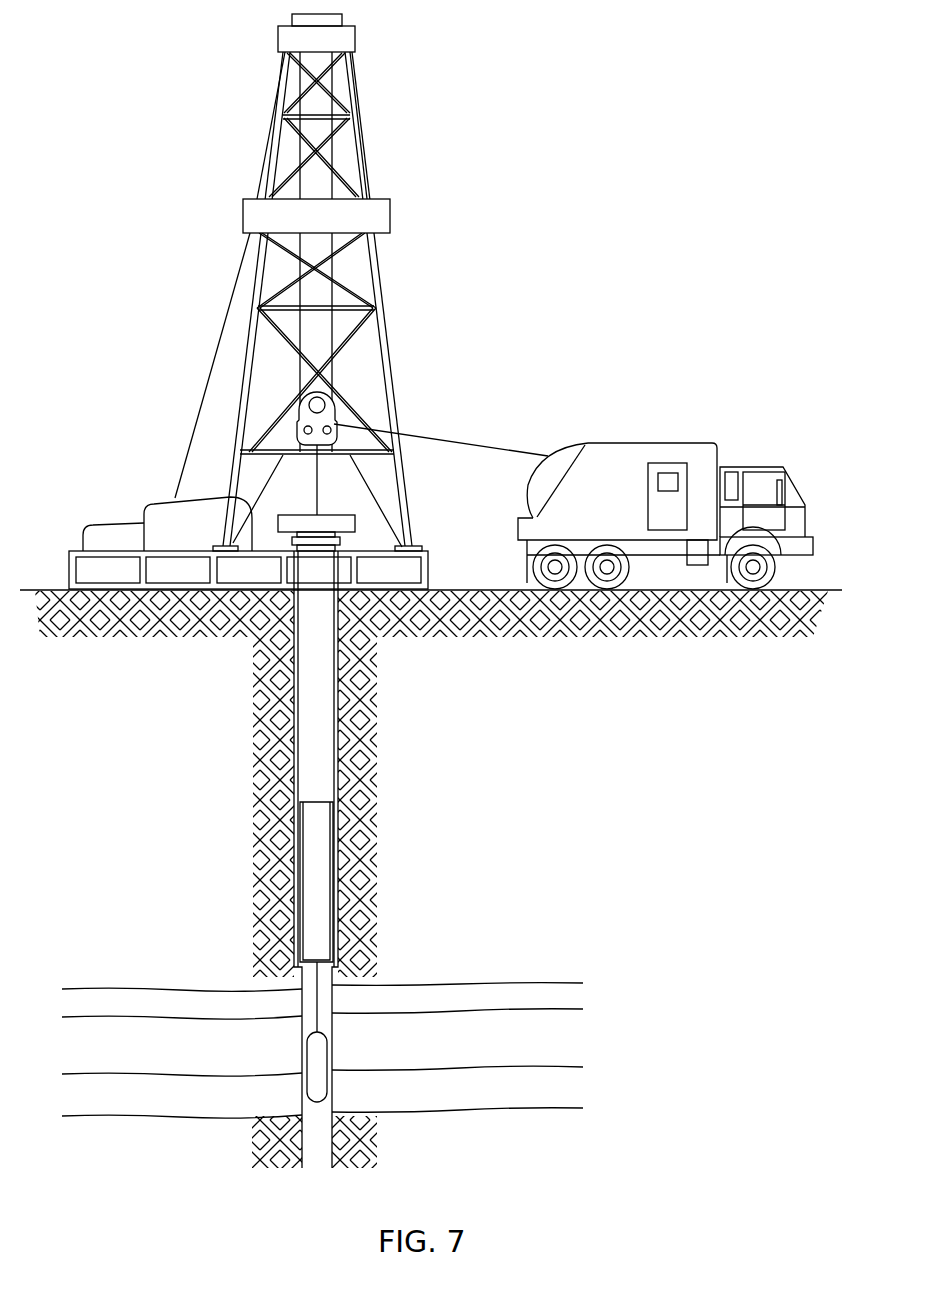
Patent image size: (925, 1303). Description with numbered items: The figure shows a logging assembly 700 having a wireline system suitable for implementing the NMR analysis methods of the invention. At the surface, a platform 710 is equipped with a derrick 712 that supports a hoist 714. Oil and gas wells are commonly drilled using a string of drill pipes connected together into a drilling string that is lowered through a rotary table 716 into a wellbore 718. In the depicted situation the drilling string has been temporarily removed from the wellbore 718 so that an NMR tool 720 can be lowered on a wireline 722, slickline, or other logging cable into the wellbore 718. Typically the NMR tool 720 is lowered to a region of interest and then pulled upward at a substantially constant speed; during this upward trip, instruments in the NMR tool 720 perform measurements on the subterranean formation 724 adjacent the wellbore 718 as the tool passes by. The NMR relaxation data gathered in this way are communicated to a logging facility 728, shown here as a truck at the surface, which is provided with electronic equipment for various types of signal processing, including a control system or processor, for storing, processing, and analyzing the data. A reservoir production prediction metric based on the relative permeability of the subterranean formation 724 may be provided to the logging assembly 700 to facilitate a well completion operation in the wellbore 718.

The logging assembly 700 is at (583, 267).
The platform 710 is at (428, 573).
The derrick 712 is at (413, 533).
The hoist 714 is at (336, 408).
The rotary table 716 is at (357, 523).
The wellbore 718 is at (302, 996).
The NMR tool 720 is at (326, 1050).
The wireline 722 is at (453, 441).
The subterranean formation 724 is at (603, 982).
The logging facility 728 is at (613, 443).